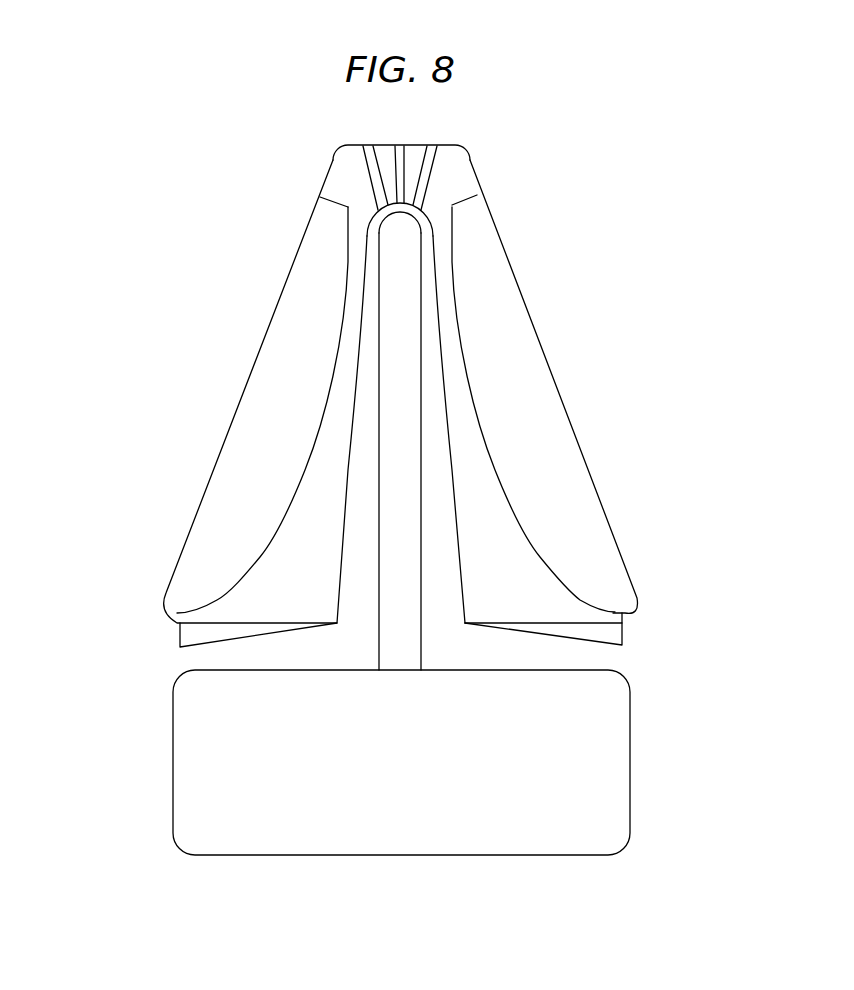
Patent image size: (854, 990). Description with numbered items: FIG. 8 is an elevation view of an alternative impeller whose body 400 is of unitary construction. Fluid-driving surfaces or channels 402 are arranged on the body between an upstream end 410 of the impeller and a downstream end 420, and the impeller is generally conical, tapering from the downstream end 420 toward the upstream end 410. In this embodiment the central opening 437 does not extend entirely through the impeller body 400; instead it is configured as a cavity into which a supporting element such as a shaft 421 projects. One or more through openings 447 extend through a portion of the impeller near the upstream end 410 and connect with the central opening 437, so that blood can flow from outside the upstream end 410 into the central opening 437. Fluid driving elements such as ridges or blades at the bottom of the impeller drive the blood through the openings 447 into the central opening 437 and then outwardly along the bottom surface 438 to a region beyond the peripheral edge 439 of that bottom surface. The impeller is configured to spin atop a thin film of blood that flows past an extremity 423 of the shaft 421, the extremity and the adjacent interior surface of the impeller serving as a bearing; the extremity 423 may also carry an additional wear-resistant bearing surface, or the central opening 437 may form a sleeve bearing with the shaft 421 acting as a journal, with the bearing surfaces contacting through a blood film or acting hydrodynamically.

The body 400 is at (590, 373).
The fluid-driving surfaces or channels 402 is at (533, 262).
The upstream end 410 is at (476, 126).
The downstream end 420 is at (79, 639).
The shaft 421 is at (388, 386).
The extremity 423 is at (398, 212).
The central opening 437 is at (362, 532).
The bottom surface 438 is at (600, 647).
The peripheral edge 439 is at (622, 626).
The through openings 447 is at (367, 180).